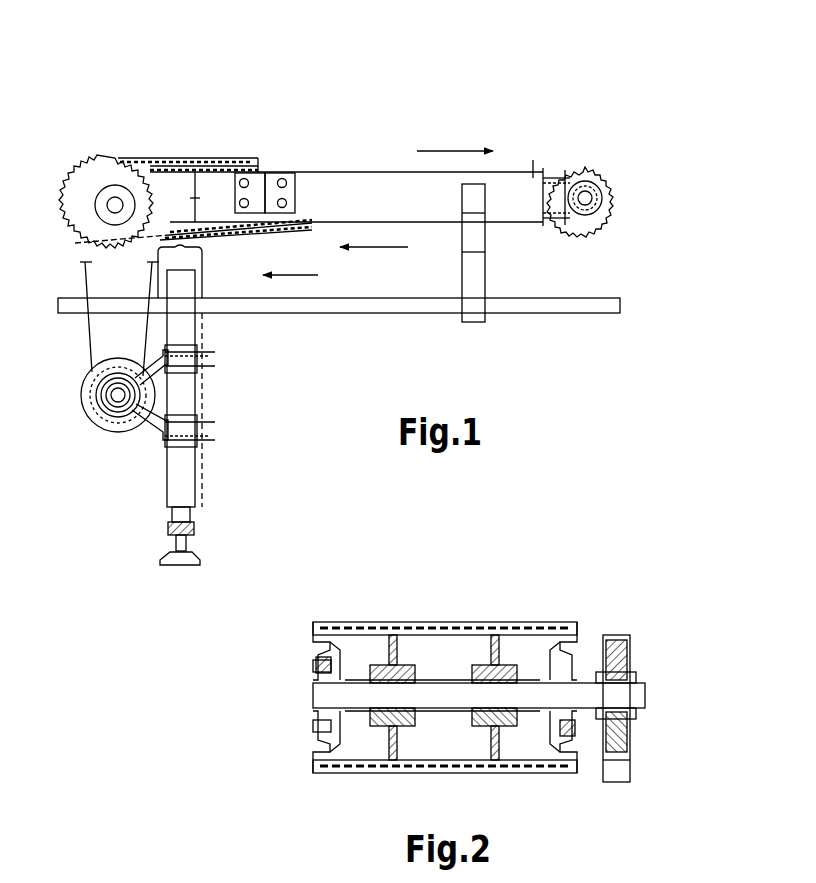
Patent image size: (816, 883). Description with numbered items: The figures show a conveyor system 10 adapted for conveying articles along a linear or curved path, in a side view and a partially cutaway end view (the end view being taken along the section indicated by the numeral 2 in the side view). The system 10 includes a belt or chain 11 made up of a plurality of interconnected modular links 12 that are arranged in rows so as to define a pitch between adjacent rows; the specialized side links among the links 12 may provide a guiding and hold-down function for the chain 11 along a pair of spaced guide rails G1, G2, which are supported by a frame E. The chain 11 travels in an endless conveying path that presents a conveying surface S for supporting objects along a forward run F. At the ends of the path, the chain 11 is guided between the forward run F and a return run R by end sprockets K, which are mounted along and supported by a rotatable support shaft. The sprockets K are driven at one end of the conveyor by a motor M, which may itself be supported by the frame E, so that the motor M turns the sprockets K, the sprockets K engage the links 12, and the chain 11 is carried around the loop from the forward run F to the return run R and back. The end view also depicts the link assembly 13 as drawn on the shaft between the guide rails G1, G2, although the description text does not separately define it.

In FIG. 1, the conveyor system 10 is at (609, 96).
In FIG. 1, the section line / column 2 is at (150, 112).
In FIG. 1, the end sprockets K is at (148, 185).
In FIG. 2, the end sprockets K is at (490, 650).
In FIG. 1, the motor M is at (121, 432).
In FIG. 1, the forward run F is at (450, 150).
In FIG. 1, the conveying surface S is at (533, 155).
In FIG. 1, the return run R is at (380, 247).
In FIG. 1, the frame E is at (297, 232).
In FIG. 2, the chain 11 is at (386, 590).
In FIG. 2, the modular links 12 is at (577, 640).
In FIG. 2, the sprocket wheel 13 is at (313, 640).
In FIG. 2, the guide rail G1 is at (313, 727).
In FIG. 2, the guide rail G2 is at (575, 742).